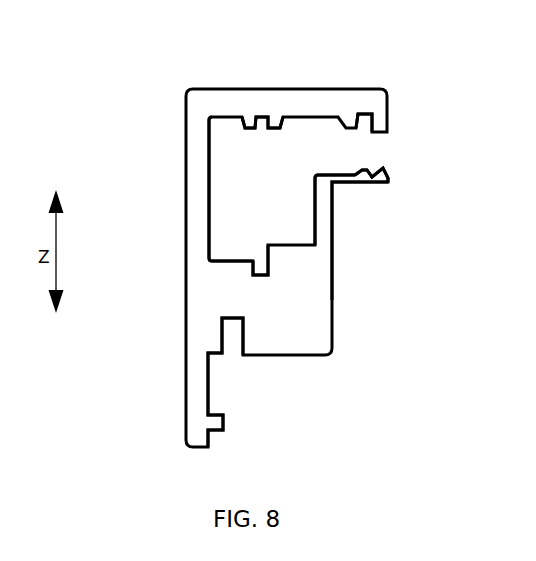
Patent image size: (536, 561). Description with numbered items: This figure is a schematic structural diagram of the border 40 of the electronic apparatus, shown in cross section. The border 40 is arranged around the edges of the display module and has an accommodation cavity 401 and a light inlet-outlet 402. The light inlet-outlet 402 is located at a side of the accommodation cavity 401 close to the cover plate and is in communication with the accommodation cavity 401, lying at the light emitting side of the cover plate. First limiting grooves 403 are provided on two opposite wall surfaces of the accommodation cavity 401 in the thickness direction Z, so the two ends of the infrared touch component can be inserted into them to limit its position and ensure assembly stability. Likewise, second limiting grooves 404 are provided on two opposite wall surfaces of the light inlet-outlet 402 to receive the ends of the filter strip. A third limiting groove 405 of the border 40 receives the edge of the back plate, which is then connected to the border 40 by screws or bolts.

The border 40 is at (213, 277).
The accommodation cavity 401 is at (222, 183).
The light inlet-outlet 402 is at (347, 152).
The first limiting grooves 403 is at (262, 121).
The second limiting grooves 404 is at (361, 117).
The third limiting groove 405 is at (231, 338).